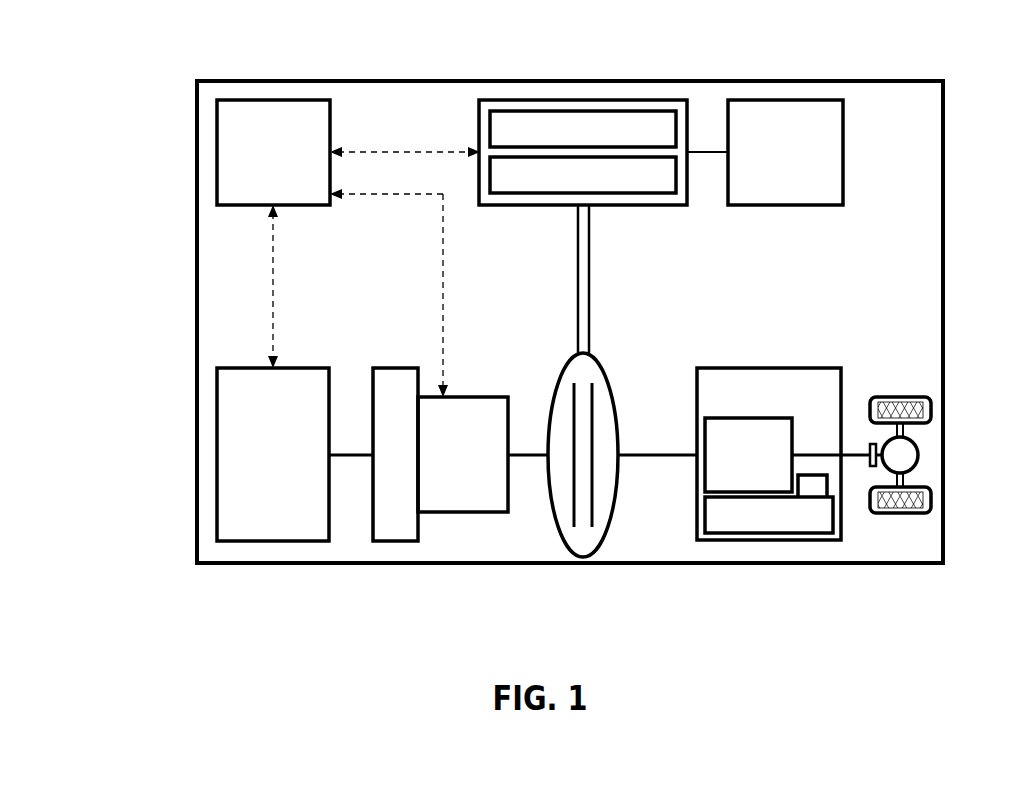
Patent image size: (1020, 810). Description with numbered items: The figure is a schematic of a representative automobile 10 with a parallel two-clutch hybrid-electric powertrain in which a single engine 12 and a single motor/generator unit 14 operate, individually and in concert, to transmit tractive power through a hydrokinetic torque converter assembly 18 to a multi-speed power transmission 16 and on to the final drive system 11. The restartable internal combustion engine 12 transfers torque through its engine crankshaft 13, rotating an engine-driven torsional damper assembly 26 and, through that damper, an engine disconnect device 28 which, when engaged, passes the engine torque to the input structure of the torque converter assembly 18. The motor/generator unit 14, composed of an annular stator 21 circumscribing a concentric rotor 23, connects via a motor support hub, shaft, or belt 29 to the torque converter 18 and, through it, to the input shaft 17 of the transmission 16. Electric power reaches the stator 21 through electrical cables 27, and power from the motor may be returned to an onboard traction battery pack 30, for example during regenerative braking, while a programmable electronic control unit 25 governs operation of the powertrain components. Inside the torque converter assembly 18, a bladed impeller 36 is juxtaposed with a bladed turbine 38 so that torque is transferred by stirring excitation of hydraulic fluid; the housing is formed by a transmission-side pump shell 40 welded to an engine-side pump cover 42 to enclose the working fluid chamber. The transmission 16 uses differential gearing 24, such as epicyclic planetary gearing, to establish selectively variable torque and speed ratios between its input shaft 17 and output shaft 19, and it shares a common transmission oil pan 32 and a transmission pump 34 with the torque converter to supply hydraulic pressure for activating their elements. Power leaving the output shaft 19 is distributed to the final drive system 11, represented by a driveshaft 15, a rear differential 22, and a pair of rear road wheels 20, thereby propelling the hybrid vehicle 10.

The automobile 10 is at (180, 58).
The final drive system 11 is at (926, 268).
The engine 12 is at (232, 368).
The engine crankshaft 13 is at (350, 455).
The motor/generator unit 14 is at (495, 100).
The driveshaft 15 is at (858, 455).
The multi-speed power transmission 16 is at (712, 368).
The input shaft 17 is at (652, 455).
The hydrokinetic torque converter assembly 18 is at (613, 500).
The output shaft 19 is at (808, 455).
The road wheels 20 is at (895, 396).
The stator 21 is at (490, 120).
The rear differential 22 is at (919, 452).
The rotor 23 is at (490, 166).
The differential gearing 24 is at (749, 418).
The electronic control unit 25 is at (229, 100).
The torsional damper assembly 26 is at (417, 368).
The electrical cables 27 is at (701, 152).
The engine disconnect device 28 is at (480, 397).
The motor output member 29 is at (578, 232).
The traction battery pack 30 is at (758, 100).
The transmission oil pan 32 is at (747, 517).
The transmission pump 34 is at (810, 487).
The impeller 36 is at (570, 525).
The turbine 38 is at (595, 525).
The pump shell 40 is at (615, 485).
The pump cover 42 is at (553, 510).